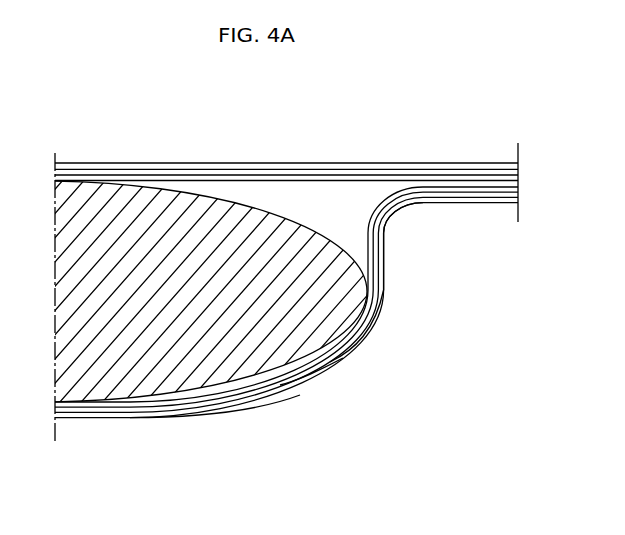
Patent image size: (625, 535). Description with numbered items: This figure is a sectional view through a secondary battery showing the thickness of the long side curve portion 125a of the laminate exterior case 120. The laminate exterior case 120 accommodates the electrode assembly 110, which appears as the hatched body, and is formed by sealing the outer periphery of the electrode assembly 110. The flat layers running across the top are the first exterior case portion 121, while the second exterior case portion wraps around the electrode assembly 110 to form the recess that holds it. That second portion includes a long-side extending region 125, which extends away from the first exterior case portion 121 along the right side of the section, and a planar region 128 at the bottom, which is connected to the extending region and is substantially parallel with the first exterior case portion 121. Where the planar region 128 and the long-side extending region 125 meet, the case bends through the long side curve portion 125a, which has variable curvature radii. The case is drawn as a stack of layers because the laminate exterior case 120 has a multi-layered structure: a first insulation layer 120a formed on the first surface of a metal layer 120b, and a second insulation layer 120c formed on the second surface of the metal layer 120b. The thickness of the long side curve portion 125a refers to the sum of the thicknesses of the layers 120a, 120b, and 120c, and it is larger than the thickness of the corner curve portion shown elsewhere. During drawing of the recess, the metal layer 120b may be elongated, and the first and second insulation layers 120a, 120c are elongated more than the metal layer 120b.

The electrode assembly 110 is at (152, 207).
The first exterior case portion 121 is at (292, 162).
The laminate exterior case 120 is at (286, 152).
The long-side extending region 125 is at (389, 249).
The first insulation layer 120a is at (343, 358).
The metal layer 120b is at (365, 340).
The second insulation layer 120c is at (382, 313).
The long side curve portion 125a is at (290, 395).
The planar region 128 is at (78, 425).